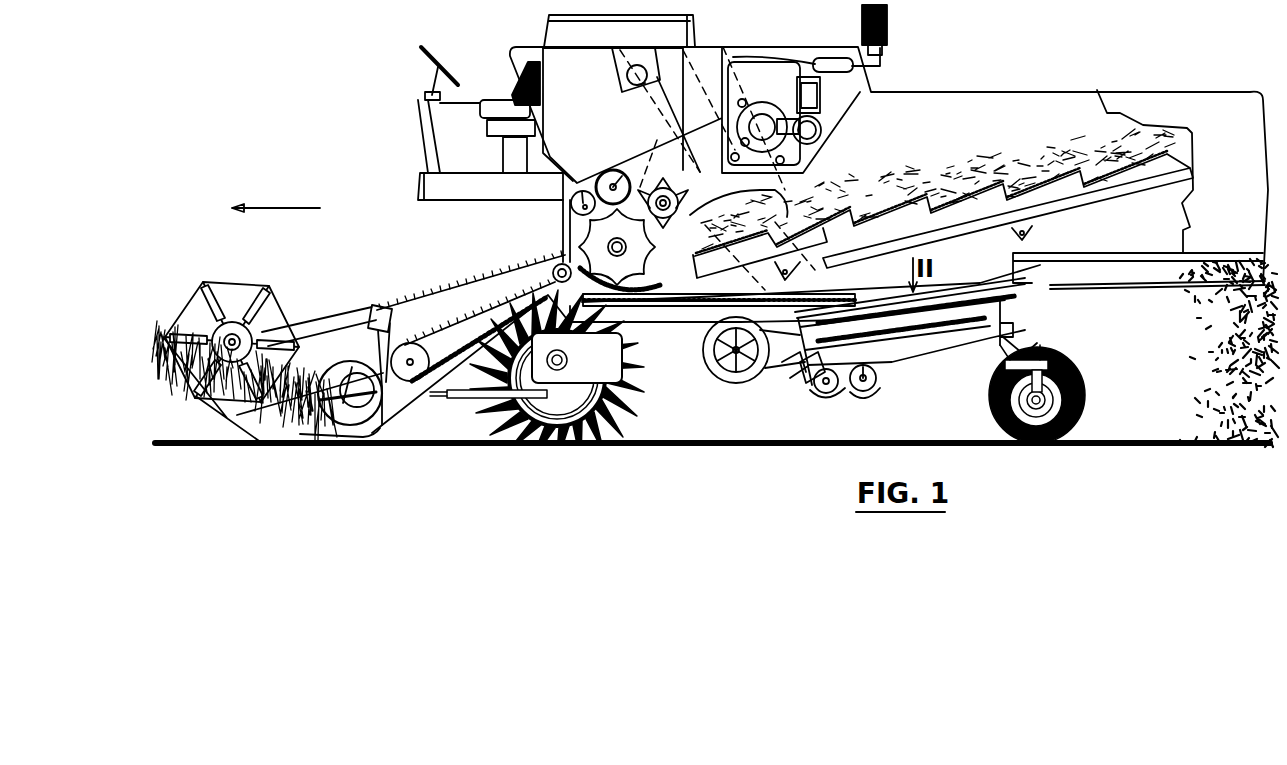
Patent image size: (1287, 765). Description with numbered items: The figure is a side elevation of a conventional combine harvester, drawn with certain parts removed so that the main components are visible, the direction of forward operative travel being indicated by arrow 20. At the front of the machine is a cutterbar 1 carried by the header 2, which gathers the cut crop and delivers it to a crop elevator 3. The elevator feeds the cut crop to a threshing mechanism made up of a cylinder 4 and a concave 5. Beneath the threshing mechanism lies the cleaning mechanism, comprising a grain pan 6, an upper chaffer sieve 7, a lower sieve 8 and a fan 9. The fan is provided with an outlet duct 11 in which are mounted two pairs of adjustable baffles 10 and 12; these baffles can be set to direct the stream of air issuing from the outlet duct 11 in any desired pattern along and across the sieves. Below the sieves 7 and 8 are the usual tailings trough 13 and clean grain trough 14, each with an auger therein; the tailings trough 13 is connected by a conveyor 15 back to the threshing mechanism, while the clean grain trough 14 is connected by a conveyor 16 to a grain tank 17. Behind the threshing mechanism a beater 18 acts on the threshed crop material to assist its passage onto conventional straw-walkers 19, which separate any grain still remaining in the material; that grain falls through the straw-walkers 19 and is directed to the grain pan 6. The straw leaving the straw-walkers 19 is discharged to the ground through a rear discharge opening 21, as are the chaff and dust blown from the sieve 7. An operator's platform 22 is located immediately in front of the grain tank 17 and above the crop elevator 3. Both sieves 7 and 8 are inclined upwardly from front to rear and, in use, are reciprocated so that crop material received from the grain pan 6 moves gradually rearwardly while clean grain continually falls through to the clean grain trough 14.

The cutterbar 1 is at (260, 442).
The header 2 is at (336, 311).
The crop elevator 3 is at (455, 292).
The cylinder 4 is at (578, 240).
The concave 5 is at (650, 308).
The grain pan 6 is at (690, 323).
The upper chaffer sieve 7 is at (947, 307).
The lower sieve 8 is at (928, 335).
The fan 9 is at (733, 373).
The adjustable baffles 10 is at (806, 375).
The outlet duct 11 is at (792, 382).
The adjustable baffles 12 is at (782, 365).
The tailings trough 13 is at (873, 390).
The clean grain trough 14 is at (838, 390).
The conveyor 15 is at (668, 200).
The conveyor 16 is at (775, 190).
The grain tank 17 is at (595, 116).
The beater 18 is at (680, 195).
The straw-walkers 19 is at (1082, 207).
The arrow 20 is at (285, 208).
The rear discharge opening 21 is at (1160, 290).
The operator's platform 22 is at (418, 188).